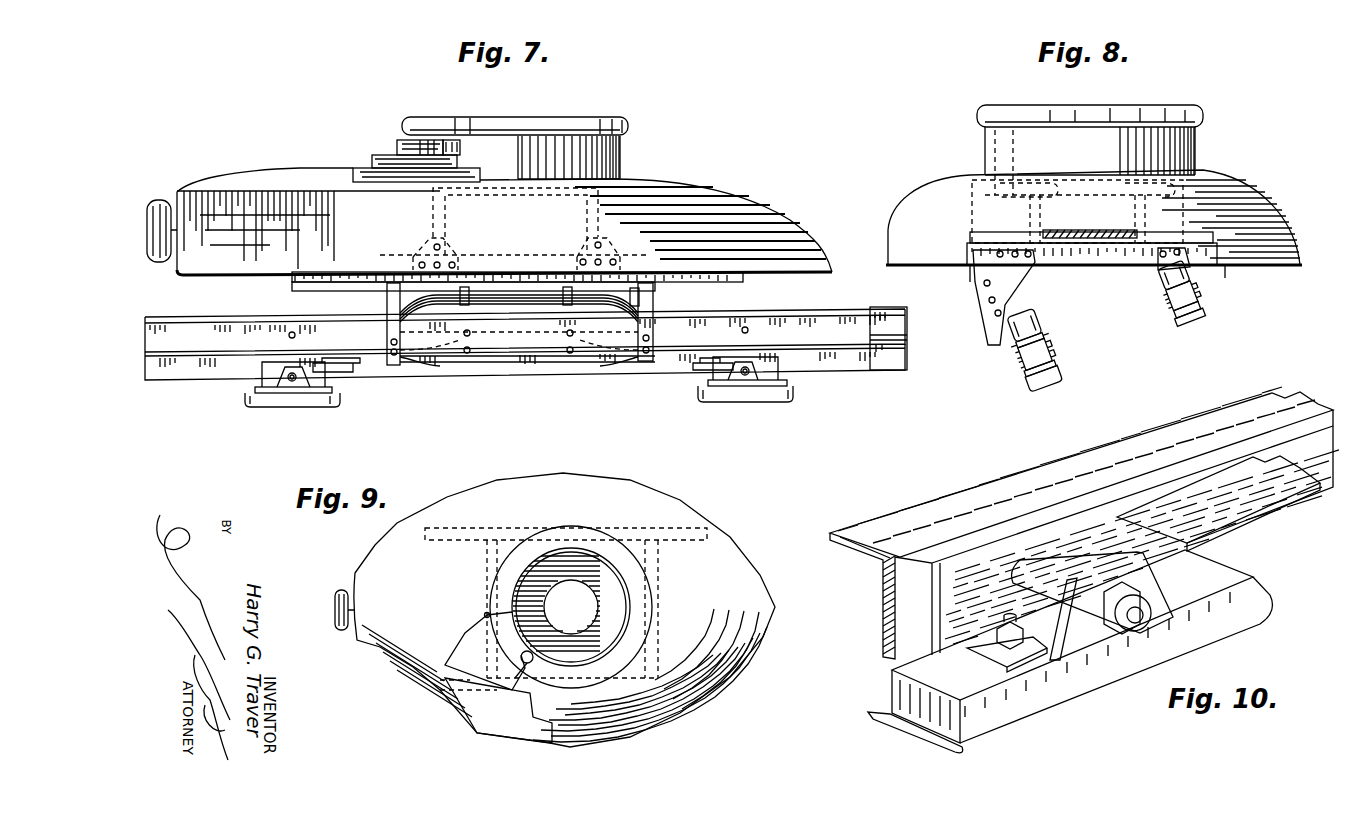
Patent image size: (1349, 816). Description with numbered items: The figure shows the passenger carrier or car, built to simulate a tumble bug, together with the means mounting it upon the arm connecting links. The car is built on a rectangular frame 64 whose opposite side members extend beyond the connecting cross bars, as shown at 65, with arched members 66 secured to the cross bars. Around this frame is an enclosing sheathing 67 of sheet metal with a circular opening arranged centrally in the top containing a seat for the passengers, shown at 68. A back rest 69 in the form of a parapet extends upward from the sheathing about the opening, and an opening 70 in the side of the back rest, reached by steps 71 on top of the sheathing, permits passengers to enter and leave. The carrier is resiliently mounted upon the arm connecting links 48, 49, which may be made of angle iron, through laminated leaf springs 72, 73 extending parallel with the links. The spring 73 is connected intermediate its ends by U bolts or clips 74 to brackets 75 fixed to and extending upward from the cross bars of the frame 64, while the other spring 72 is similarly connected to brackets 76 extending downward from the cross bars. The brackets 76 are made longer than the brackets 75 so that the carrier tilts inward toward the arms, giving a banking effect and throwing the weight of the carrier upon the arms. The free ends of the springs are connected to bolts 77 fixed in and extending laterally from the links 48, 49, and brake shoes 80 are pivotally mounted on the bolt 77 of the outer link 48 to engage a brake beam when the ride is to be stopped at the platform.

In FIG. 7, the arm connecting link 48 is at (848, 366).
In FIG. 8, the arm connecting link 48 is at (1050, 338).
In FIG. 10, the arm connecting link 48 is at (1000, 488).
In FIG. 7, the arm connecting link 49 is at (794, 318).
In FIG. 8, the arm connecting link 49 is at (1163, 312).
In FIG. 7, the rectangular frame 64 is at (490, 273).
In FIG. 8, the rectangular frame 64 is at (1092, 255).
In FIG. 9, the rectangular frame 64 is at (660, 595).
In FIG. 9, the extended ends of side members 65 is at (668, 530).
In FIG. 7, the arched members 66 is at (433, 214).
In FIG. 8, the arched members 66 is at (972, 207).
In FIG. 8, the enclosing sheathing 67 is at (906, 222).
In FIG. 9, the enclosing sheathing 67 is at (555, 610).
In FIG. 8, the seat 68 is at (1012, 185).
In FIG. 9, the seat 68 is at (578, 578).
In FIG. 7, the back rest 69 is at (620, 160).
In FIG. 8, the back rest 69 is at (1190, 147).
In FIG. 9, the back rest 69 is at (638, 585).
In FIG. 7, the opening 70 is at (402, 126).
In FIG. 9, the opening 70 is at (536, 657).
In FIG. 7, the steps 71 is at (395, 146).
In FIG. 9, the steps 71 is at (478, 688).
In FIG. 7, the laminated leaf spring 72 is at (652, 360).
In FIG. 8, the laminated leaf spring 72 is at (1023, 345).
In FIG. 10, the laminated leaf spring 72 is at (1218, 503).
In FIG. 7, the laminated leaf spring 73 is at (640, 290).
In FIG. 8, the laminated leaf spring 73 is at (1196, 297).
In FIG. 7, the U bolts or clips 74 is at (485, 306).
In FIG. 8, the U bolts or clips 74 is at (1035, 312).
In FIG. 8, the brackets 75 is at (1163, 263).
In FIG. 7, the brackets 76 is at (387, 330).
In FIG. 8, the brackets 76 is at (993, 290).
In FIG. 7, the bolt 77 is at (292, 380).
In FIG. 8, the bolt 77 is at (1055, 357).
In FIG. 10, the bolt 77 is at (1137, 628).
In FIG. 7, the brake shoe 80 is at (307, 396).
In FIG. 8, the brake shoe 80 is at (1047, 392).
In FIG. 10, the brake shoe 80 is at (1067, 678).